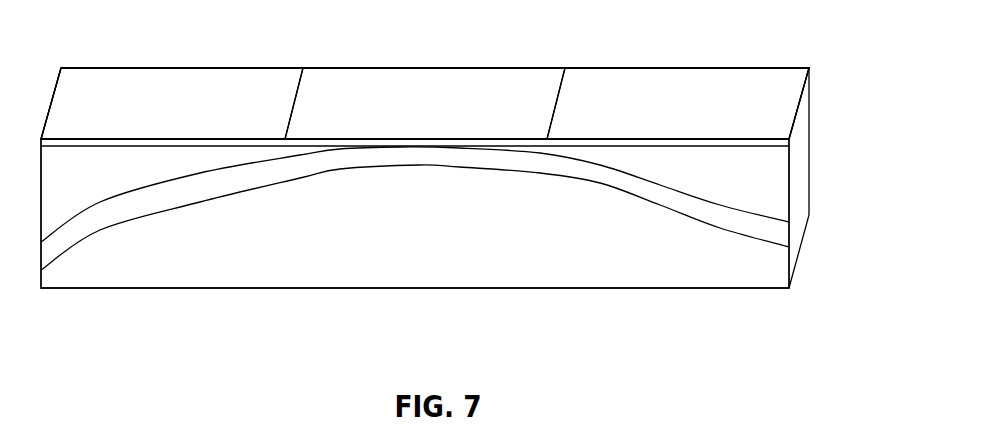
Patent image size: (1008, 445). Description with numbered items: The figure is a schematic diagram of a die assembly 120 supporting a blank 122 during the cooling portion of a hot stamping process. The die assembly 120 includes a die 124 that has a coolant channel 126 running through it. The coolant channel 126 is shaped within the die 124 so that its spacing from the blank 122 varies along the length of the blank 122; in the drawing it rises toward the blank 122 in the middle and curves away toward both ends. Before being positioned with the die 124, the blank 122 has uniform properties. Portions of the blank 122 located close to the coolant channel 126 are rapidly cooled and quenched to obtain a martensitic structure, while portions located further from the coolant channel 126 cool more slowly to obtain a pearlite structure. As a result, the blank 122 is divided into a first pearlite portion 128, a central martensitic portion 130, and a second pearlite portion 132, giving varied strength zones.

The die assembly 120 is at (790, 290).
The blank 122 is at (800, 108).
The die 124 is at (505, 290).
The coolant channel 126 is at (457, 170).
The first pearlite portion 128 is at (90, 92).
The martensitic portion 130 is at (322, 92).
The second pearlite portion 132 is at (588, 92).